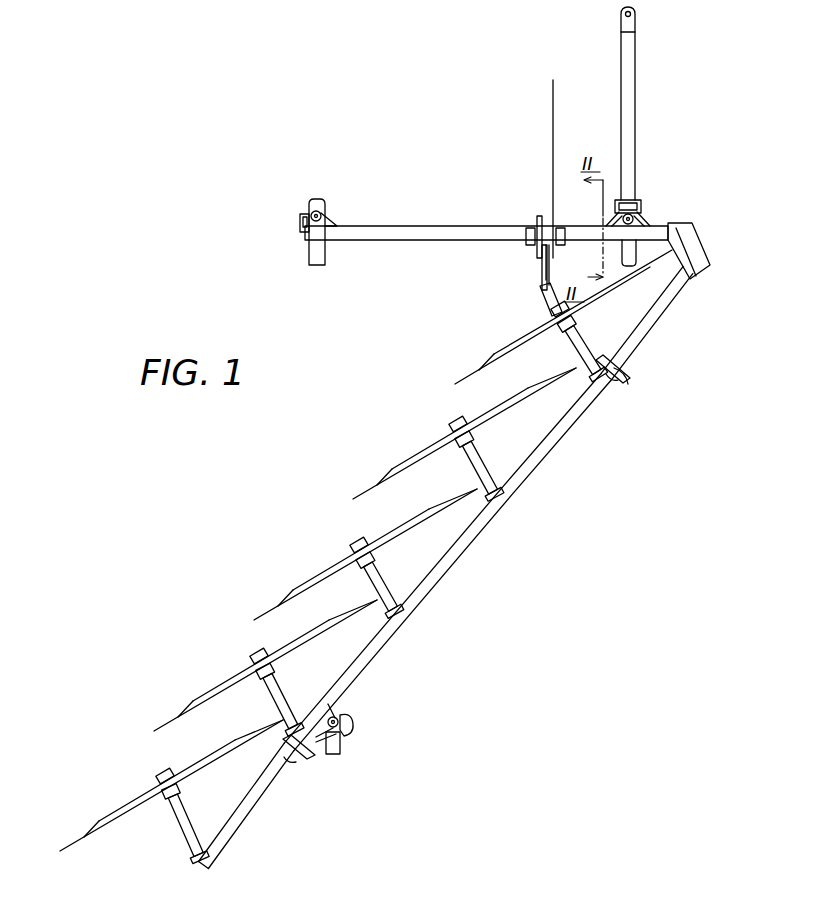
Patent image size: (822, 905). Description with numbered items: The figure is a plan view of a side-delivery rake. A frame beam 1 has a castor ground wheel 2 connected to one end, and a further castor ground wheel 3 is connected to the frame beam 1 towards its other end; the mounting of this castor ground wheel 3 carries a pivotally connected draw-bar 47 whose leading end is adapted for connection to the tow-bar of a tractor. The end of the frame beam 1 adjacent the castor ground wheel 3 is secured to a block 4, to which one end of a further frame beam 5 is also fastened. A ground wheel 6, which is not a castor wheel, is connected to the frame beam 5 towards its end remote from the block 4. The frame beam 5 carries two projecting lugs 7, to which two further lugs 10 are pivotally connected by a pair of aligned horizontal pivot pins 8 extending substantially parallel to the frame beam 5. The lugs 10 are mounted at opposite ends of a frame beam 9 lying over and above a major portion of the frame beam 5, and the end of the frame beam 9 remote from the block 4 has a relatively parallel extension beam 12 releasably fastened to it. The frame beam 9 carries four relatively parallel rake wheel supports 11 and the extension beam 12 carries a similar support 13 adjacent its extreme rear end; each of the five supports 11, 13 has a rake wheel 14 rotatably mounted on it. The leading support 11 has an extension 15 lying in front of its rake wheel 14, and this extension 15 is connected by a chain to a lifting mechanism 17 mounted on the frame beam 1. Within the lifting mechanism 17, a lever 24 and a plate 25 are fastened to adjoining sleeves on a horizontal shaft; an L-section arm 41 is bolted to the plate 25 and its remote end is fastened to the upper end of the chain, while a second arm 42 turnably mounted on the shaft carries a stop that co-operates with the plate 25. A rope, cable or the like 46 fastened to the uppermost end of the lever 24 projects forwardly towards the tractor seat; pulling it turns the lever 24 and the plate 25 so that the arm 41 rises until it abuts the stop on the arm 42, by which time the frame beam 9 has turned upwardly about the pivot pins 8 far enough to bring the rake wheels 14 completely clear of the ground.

The frame beam 1 is at (400, 226).
The castor ground wheel 2 is at (305, 256).
The castor ground wheel 3 is at (636, 256).
The block 4 is at (694, 230).
The frame beam 5 is at (667, 305).
The ground wheel 6 is at (342, 740).
The projecting lugs 7 is at (614, 380).
The pivot pins 8 is at (634, 376).
The frame beam 9 is at (465, 557).
The lugs 10 is at (630, 385).
The rake wheel supports 11 is at (580, 346).
The extension beam 12 is at (258, 801).
The rake wheel support 13 is at (190, 818).
The rake wheel 14 is at (470, 370).
The extension 15 is at (548, 305).
The lifting mechanism 17 is at (537, 222).
The lever 24 is at (553, 280).
The plate 25 is at (544, 262).
The arm 41 is at (541, 282).
The arm 42 is at (526, 246).
The rope, cable or the like 46 is at (553, 88).
The draw-bar 47 is at (635, 95).